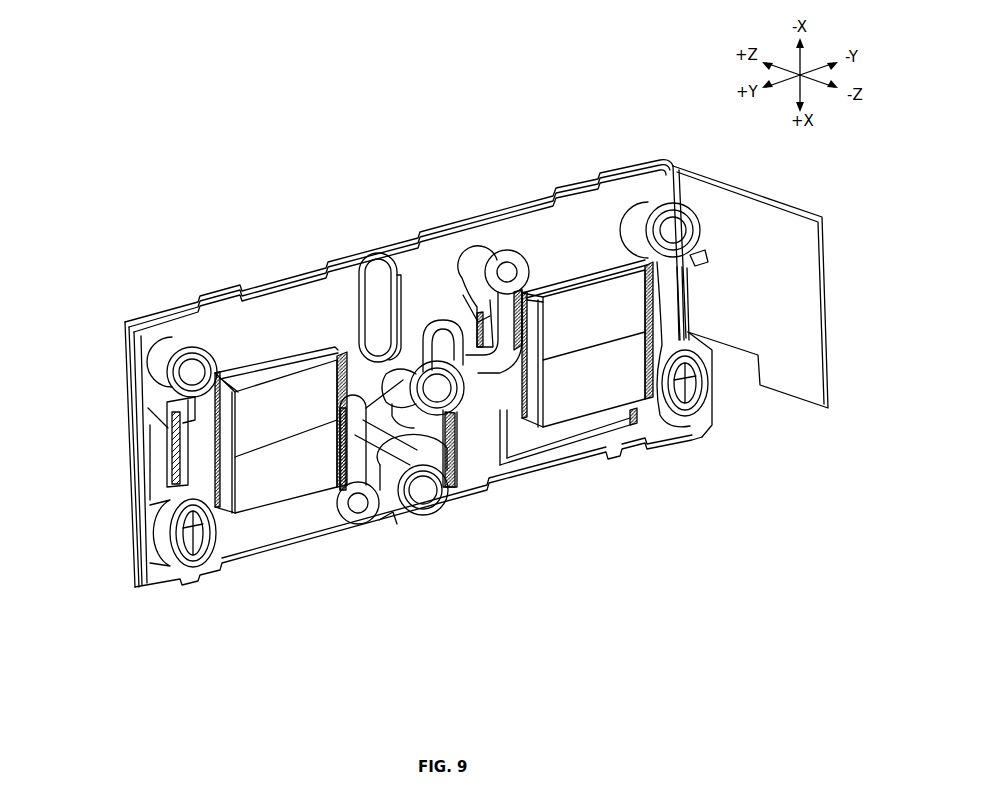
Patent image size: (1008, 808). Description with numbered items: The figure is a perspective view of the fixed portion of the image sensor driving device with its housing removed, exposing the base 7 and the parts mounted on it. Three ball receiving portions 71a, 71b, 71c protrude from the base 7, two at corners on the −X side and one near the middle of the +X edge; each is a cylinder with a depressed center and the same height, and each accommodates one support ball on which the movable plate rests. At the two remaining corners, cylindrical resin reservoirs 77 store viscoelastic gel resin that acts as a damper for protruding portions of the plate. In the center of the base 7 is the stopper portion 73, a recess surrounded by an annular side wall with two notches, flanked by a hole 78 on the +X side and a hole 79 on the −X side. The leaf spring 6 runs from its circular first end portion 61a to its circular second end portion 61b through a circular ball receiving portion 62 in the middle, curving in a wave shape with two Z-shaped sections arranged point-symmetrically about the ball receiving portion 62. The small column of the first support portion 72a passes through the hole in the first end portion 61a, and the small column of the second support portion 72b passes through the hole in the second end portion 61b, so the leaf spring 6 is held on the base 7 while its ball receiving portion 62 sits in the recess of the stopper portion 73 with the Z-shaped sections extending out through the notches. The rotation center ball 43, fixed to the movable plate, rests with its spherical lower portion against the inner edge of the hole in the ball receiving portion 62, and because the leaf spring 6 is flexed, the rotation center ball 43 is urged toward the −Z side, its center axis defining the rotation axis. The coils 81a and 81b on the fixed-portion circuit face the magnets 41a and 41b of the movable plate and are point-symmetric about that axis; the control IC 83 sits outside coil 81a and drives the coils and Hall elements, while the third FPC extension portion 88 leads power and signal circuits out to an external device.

The leaf spring 6 is at (443, 323).
The base 7 is at (275, 305).
The magnet 41a is at (597, 378).
The magnet 41b is at (258, 495).
The rotation center ball 43 is at (477, 407).
The first end portion 61a is at (513, 258).
The second end portion 61b is at (357, 525).
The ball receiving portion 62 is at (387, 518).
The ball receiving portion 71a is at (640, 222).
The ball receiving portion 71b is at (170, 345).
The ball receiving portion 71c is at (426, 517).
The first support portion 72a is at (480, 250).
The second support portion 72b is at (322, 500).
The stopper portion 73 is at (390, 380).
The resin reservoir 77 is at (163, 570).
The hole 78 is at (468, 500).
The hole 79 is at (372, 265).
The coil 81a is at (480, 320).
The coil 81b is at (167, 448).
The control IC 83 is at (530, 447).
The third FPC extension portion 88 is at (776, 364).